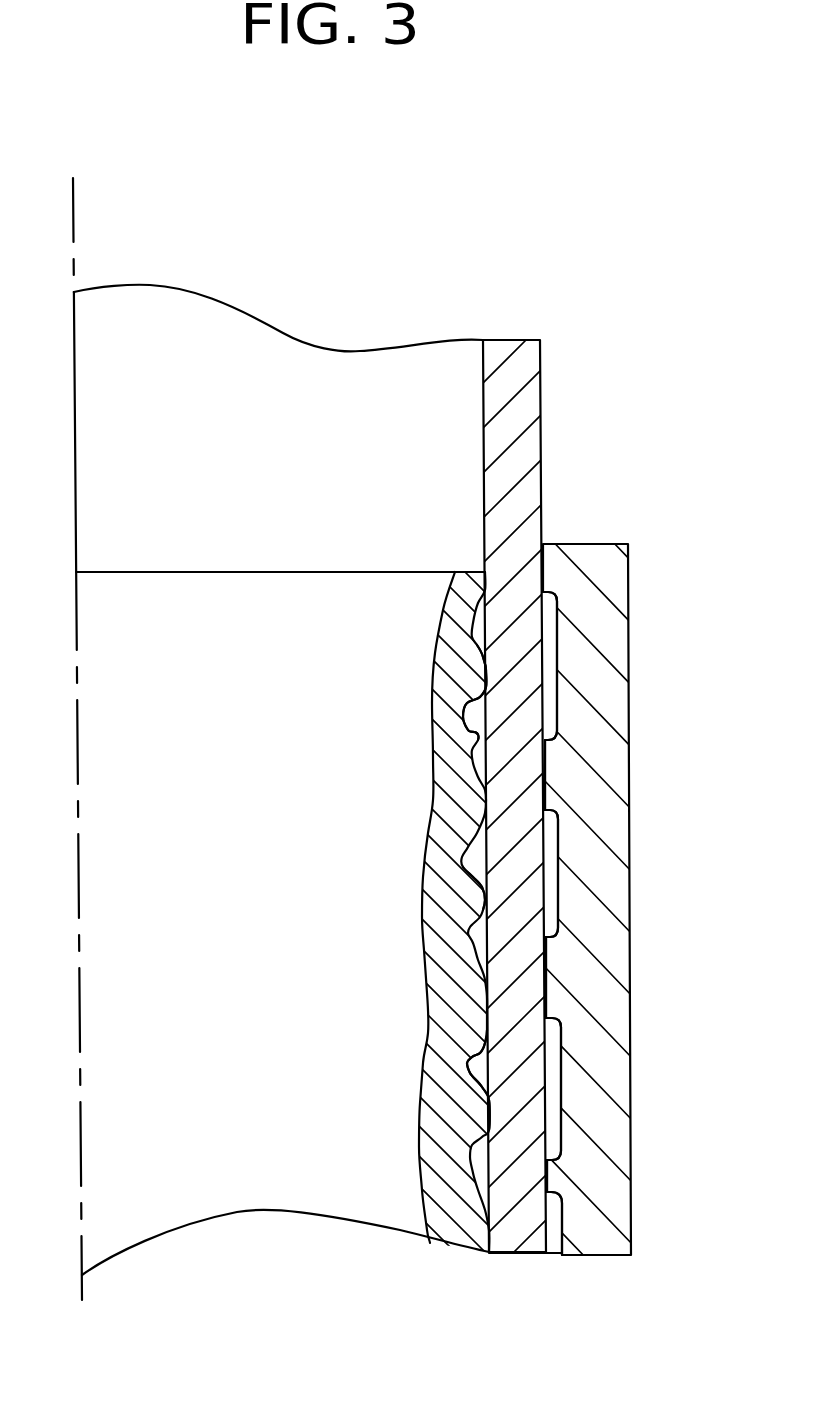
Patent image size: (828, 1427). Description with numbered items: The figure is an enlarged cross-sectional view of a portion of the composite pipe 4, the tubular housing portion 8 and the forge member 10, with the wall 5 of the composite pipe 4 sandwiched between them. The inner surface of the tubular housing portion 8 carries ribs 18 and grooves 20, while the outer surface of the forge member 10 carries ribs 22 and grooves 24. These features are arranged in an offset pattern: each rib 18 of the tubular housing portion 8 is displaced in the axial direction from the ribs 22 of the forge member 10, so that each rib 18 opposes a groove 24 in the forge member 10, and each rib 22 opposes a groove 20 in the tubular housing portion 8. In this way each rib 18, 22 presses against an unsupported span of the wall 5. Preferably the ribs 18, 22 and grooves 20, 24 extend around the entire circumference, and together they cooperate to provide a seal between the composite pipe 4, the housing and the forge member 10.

The composite pipe 4 is at (399, 739).
The wall 5 is at (508, 960).
The tubular housing portion 8 is at (605, 850).
The forge member 10 is at (445, 818).
The ribs 18 is at (550, 785).
The grooves 20 is at (558, 660).
The ribs 22 is at (470, 682).
The grooves 24 is at (482, 725).